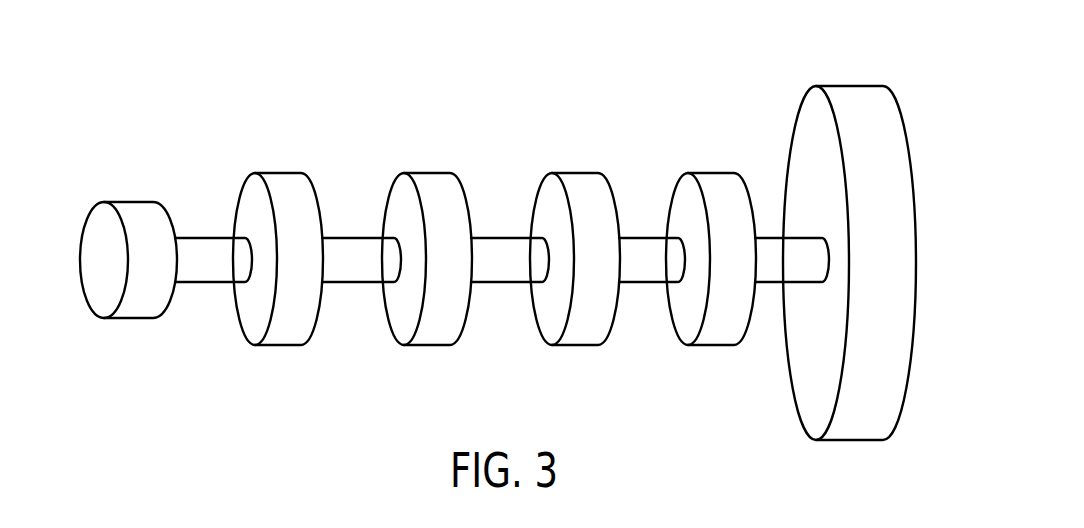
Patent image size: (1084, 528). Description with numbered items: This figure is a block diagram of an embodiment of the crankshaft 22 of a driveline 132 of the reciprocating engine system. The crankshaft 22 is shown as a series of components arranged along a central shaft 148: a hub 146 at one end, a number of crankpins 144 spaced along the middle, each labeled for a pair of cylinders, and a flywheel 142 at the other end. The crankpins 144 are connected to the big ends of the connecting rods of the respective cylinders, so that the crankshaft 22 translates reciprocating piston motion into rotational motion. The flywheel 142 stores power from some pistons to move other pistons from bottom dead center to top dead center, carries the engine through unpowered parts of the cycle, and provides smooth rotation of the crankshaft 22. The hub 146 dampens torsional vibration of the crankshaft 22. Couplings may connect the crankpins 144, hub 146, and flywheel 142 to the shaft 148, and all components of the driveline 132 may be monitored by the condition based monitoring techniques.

The crankshaft 22 is at (216, 145).
The driveline 132 is at (540, 97).
The flywheel 142 is at (848, 86).
The crankpins 144 is at (425, 172).
The hub 146 is at (90, 305).
The shaft 148 is at (218, 283).